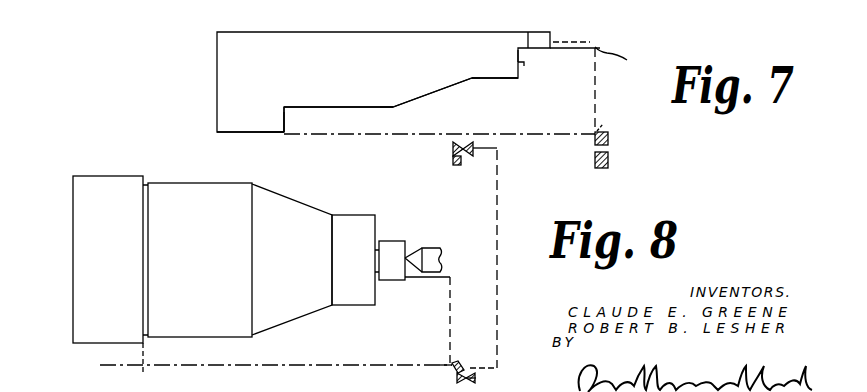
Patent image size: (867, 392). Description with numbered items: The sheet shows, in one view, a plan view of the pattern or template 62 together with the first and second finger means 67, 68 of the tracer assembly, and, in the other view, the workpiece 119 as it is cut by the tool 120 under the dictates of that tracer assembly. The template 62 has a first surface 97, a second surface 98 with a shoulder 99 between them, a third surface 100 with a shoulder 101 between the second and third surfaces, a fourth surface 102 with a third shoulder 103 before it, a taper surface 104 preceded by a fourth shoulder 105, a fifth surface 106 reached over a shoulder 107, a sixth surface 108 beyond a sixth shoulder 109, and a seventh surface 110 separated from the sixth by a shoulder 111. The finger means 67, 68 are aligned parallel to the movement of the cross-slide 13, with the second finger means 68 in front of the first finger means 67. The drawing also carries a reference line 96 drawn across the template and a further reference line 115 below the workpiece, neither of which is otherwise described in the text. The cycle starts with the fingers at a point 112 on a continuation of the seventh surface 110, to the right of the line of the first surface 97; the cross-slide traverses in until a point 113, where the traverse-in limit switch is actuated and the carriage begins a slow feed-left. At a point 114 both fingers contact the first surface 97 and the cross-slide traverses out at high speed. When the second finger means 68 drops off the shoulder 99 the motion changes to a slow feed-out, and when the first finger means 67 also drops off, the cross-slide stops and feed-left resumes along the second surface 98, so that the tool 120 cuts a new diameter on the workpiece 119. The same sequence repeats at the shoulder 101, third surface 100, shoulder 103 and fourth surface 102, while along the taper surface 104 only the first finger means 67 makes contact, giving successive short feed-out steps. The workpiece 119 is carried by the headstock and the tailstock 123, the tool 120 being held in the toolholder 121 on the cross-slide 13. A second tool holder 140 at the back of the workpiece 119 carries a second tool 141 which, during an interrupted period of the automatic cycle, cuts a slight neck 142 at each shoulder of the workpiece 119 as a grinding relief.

In FIG. 8, the cross-slide 13 is at (500, 247).
In FIG. 7, the pattern or template 62 is at (232, 64).
In FIG. 7, the first finger means 67 is at (609, 137).
In FIG. 7, the second finger means 68 is at (609, 160).
In FIG. 7, the axis line 96 is at (462, 130).
In FIG. 7, the first surface 97 is at (550, 42).
In FIG. 7, the second surface 98 is at (532, 44).
In FIG. 7, the shoulder 99 is at (552, 49).
In FIG. 7, the third surface 100 is at (525, 67).
In FIG. 7, the shoulder 101 is at (517, 63).
In FIG. 7, the fourth surface 102 is at (480, 78).
In FIG. 7, the third shoulder 103 is at (517, 72).
In FIG. 7, the taper surface 104 is at (430, 93).
In FIG. 7, the fourth shoulder 105 is at (472, 78).
In FIG. 7, the fifth surface 106 is at (336, 107).
In FIG. 7, the shoulder 107 is at (393, 107).
In FIG. 7, the sixth surface 108 is at (284, 118).
In FIG. 7, the sixth shoulder 109 is at (284, 107).
In FIG. 7, the seventh surface 110 is at (232, 132).
In FIG. 7, the shoulder 111 is at (283, 126).
In FIG. 8, the shoulder 111 is at (143, 362).
In FIG. 7, the point 112 is at (603, 124).
In FIG. 8, the point 112 is at (450, 362).
In FIG. 7, the point 113 is at (630, 61).
In FIG. 8, the point 113 is at (450, 277).
In FIG. 7, the point 114 is at (592, 47).
In FIG. 8, the point 114 is at (410, 282).
In FIG. 7, the line 115 is at (272, 133).
In FIG. 8, the line 115 is at (140, 363).
In FIG. 8, the workpiece 119 is at (293, 310).
In FIG. 8, the tool 120 is at (456, 362).
In FIG. 8, the toolholder 121 is at (478, 378).
In FIG. 8, the tailstock 123 is at (430, 248).
In FIG. 8, the second tool holder 140 is at (452, 147).
In FIG. 8, the second tool 141 is at (455, 162).
In FIG. 8, the neck 142 is at (148, 183).